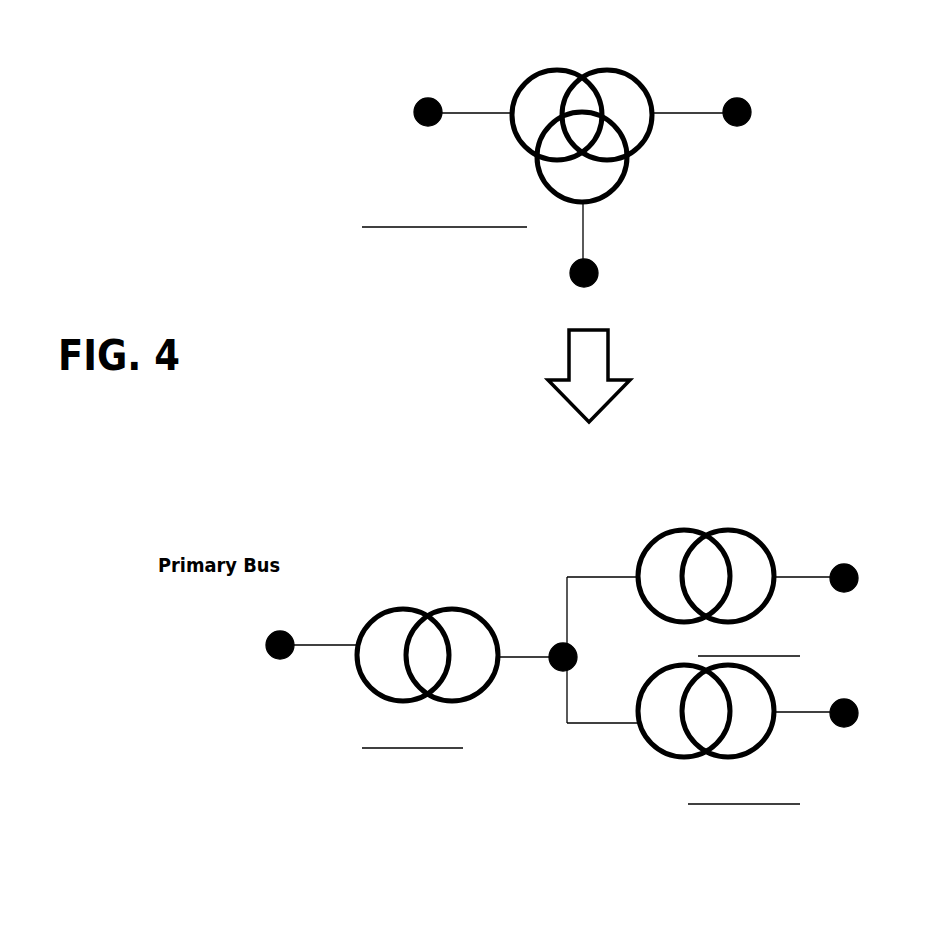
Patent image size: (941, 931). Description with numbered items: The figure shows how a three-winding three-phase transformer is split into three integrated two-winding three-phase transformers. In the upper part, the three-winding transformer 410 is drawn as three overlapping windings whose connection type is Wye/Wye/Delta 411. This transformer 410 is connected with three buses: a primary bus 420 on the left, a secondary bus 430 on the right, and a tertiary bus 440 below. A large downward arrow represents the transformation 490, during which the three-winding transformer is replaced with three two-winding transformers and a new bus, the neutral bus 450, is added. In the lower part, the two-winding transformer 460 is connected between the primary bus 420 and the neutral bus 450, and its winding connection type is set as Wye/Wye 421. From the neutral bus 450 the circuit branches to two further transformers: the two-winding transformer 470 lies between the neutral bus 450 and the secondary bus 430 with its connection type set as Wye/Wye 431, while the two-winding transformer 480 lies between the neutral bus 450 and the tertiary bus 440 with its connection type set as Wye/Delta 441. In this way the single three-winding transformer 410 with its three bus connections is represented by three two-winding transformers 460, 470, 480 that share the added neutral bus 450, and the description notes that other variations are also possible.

The three-winding transformer 410 is at (550, 70).
The Wye/Wye/Delta connection type 411 is at (455, 229).
The primary bus 420 is at (415, 102).
The Wye/Wye connection type 421 is at (440, 750).
The secondary bus 430 is at (743, 92).
The Wye/Wye connection type 431 is at (800, 658).
The tertiary bus 440 is at (596, 262).
The Wye/Delta connection type 441 is at (802, 808).
The neutral bus 450 is at (543, 653).
The two-winding transformer 460 is at (357, 665).
The two-winding transformer 470 is at (657, 535).
The two-winding transformer 480 is at (648, 752).
The transformation 490 is at (610, 360).